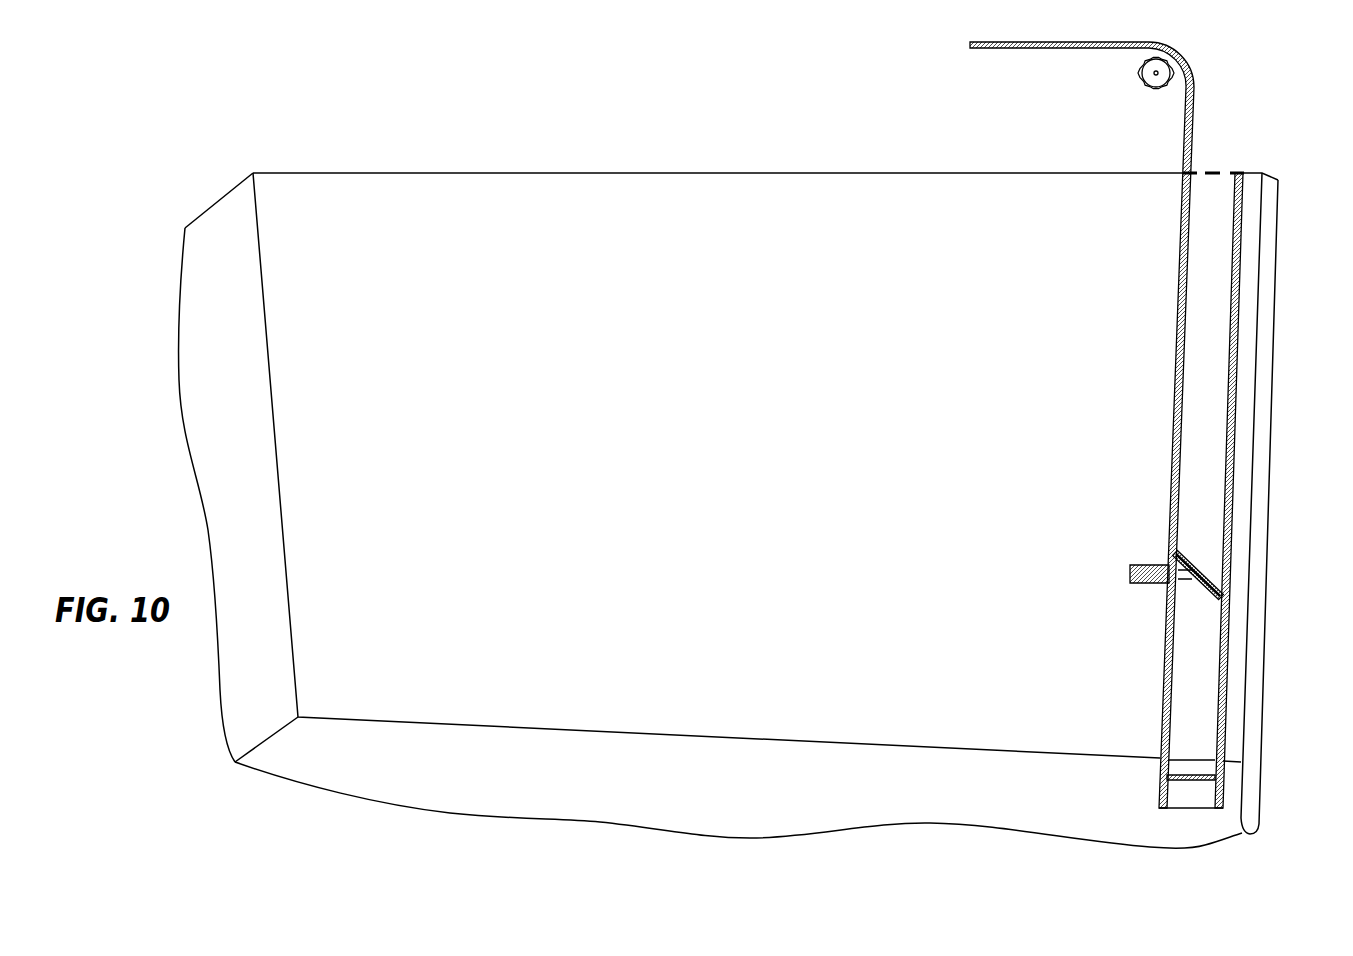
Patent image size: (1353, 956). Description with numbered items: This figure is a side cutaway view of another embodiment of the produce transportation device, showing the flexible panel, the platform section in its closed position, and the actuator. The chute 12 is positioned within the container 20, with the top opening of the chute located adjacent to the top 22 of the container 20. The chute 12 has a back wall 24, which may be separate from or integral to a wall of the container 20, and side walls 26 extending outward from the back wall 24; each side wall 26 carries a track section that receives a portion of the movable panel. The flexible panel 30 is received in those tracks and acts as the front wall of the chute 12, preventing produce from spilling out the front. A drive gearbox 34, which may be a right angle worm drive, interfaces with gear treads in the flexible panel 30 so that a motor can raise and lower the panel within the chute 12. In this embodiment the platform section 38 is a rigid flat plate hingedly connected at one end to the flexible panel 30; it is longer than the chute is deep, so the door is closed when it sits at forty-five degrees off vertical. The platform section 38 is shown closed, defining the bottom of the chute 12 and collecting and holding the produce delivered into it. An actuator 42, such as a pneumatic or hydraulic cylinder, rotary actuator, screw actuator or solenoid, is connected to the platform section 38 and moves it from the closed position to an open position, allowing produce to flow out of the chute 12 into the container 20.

The chute 12 is at (1254, 146).
The container 20 is at (489, 242).
The top of the container 22 is at (587, 173).
The back wall 24 is at (1237, 403).
The side walls 26 is at (1207, 309).
The flexible panel 30 is at (1183, 212).
The drive gearbox 34 is at (1140, 84).
The platform section 38 is at (1196, 554).
The actuator 42 is at (1150, 563).